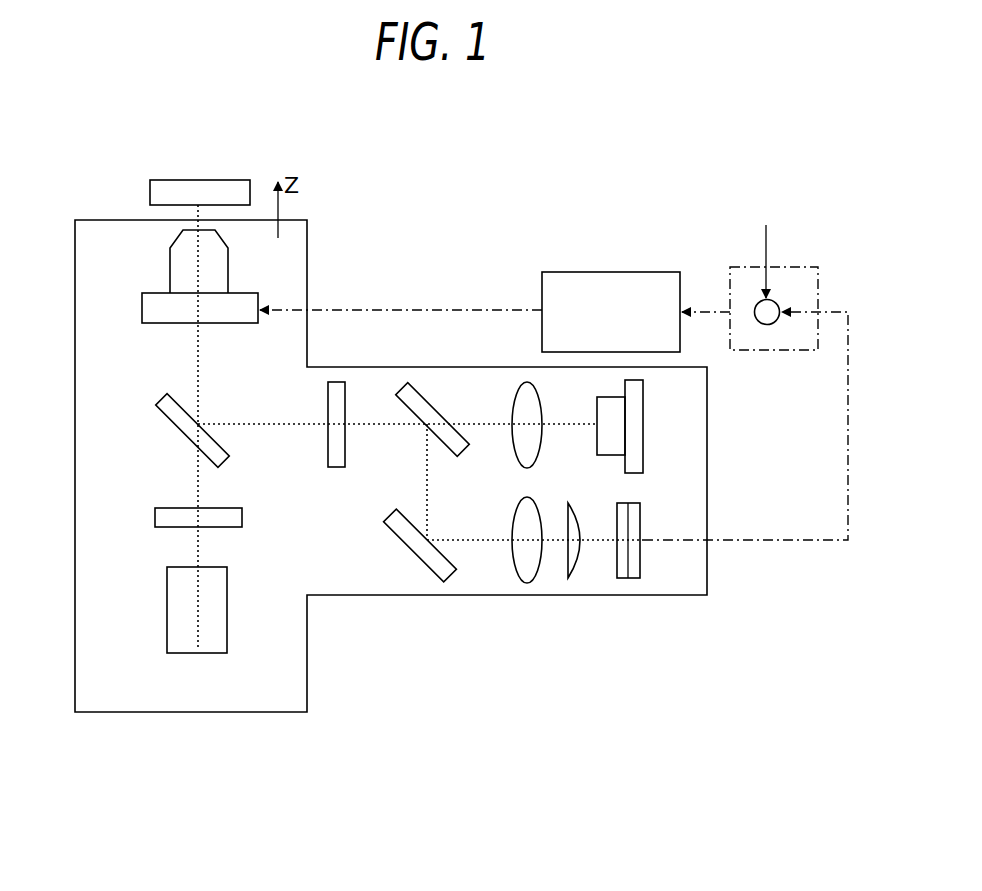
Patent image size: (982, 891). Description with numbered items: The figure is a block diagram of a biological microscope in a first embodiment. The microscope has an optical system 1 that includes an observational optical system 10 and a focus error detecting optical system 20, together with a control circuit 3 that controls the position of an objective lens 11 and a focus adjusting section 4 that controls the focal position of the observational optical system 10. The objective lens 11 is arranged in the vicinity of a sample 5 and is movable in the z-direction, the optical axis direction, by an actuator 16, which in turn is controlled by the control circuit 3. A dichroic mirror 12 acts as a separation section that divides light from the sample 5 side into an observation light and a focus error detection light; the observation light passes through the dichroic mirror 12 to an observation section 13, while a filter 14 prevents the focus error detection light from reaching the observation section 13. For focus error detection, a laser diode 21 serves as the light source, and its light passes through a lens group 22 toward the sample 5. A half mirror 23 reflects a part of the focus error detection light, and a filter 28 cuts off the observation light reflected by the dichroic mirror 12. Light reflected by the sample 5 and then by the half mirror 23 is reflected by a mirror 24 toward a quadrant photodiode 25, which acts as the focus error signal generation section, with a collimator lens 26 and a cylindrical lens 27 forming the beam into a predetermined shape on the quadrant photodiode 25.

The optical system 1 is at (307, 678).
The control circuit 3 is at (612, 272).
The focus adjusting section 4 is at (818, 270).
The sample 5 is at (150, 192).
The observational optical system 10 is at (196, 682).
The objective lens 11 is at (170, 250).
The dichroic mirror 12 is at (168, 410).
The observation section 13 is at (167, 607).
The filter 14 is at (155, 515).
The actuator 16 is at (142, 302).
The focus error detecting optical system 20 is at (684, 467).
The laser diode 21 is at (643, 402).
The lens group 22 is at (510, 398).
The half mirror 23 is at (402, 390).
The mirror 24 is at (427, 567).
The quadrant photodiode 25 is at (627, 580).
The collimator lens 26 is at (526, 583).
The cylindrical lens 27 is at (571, 580).
The filter 28 is at (328, 392).